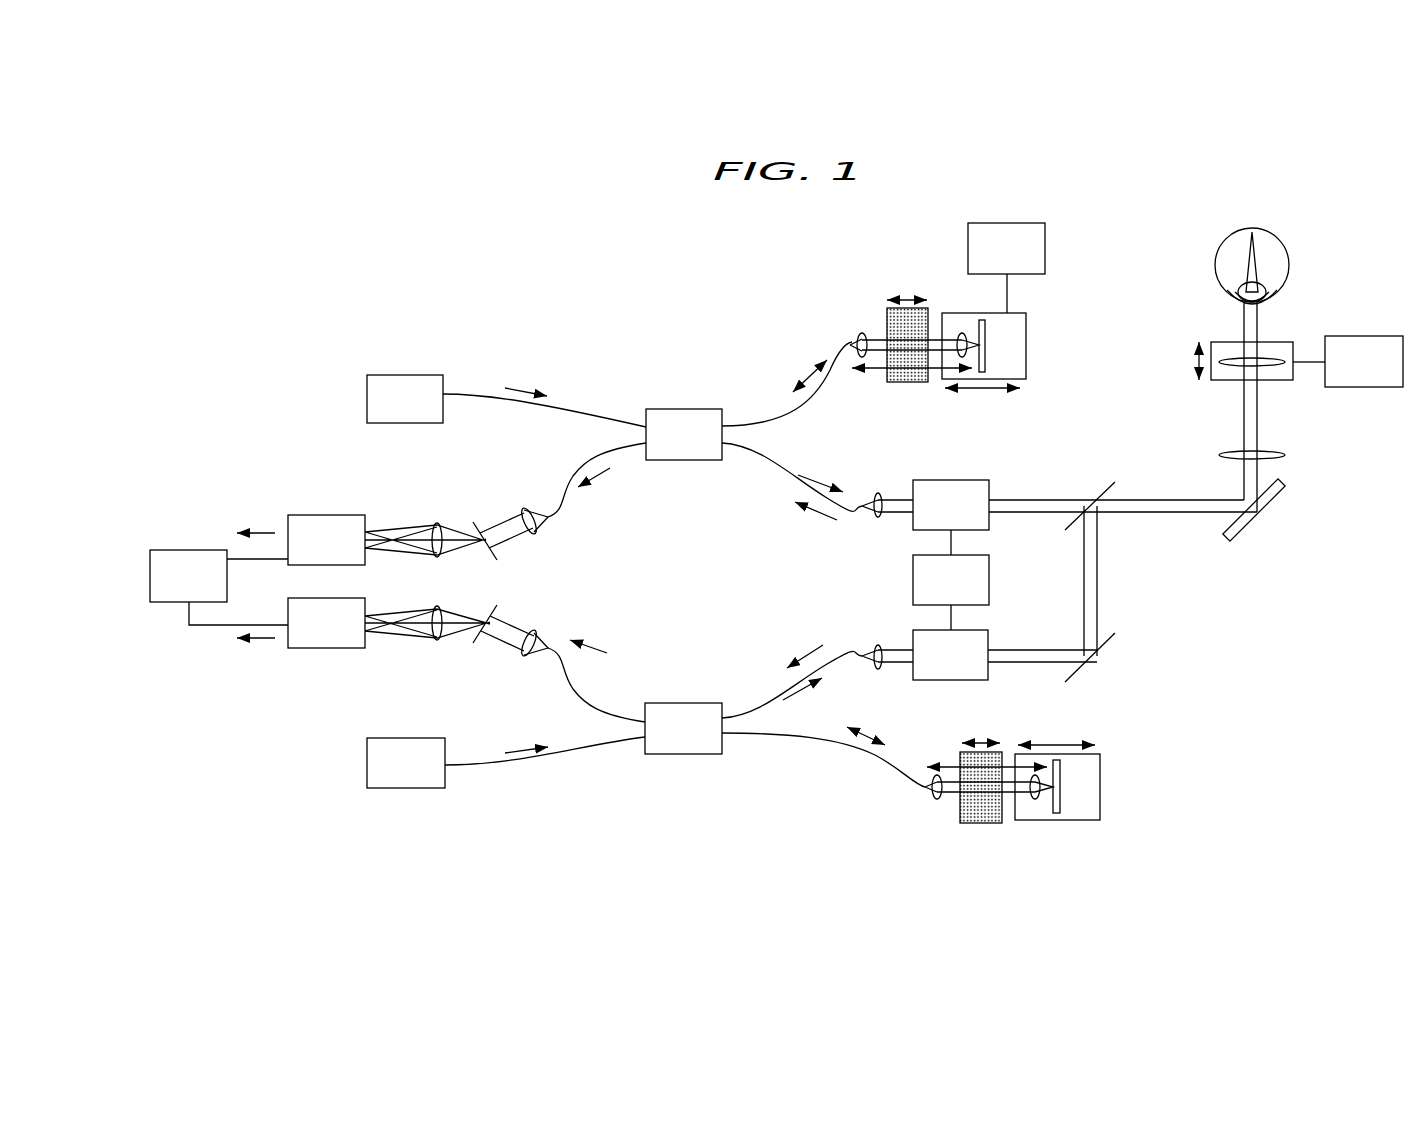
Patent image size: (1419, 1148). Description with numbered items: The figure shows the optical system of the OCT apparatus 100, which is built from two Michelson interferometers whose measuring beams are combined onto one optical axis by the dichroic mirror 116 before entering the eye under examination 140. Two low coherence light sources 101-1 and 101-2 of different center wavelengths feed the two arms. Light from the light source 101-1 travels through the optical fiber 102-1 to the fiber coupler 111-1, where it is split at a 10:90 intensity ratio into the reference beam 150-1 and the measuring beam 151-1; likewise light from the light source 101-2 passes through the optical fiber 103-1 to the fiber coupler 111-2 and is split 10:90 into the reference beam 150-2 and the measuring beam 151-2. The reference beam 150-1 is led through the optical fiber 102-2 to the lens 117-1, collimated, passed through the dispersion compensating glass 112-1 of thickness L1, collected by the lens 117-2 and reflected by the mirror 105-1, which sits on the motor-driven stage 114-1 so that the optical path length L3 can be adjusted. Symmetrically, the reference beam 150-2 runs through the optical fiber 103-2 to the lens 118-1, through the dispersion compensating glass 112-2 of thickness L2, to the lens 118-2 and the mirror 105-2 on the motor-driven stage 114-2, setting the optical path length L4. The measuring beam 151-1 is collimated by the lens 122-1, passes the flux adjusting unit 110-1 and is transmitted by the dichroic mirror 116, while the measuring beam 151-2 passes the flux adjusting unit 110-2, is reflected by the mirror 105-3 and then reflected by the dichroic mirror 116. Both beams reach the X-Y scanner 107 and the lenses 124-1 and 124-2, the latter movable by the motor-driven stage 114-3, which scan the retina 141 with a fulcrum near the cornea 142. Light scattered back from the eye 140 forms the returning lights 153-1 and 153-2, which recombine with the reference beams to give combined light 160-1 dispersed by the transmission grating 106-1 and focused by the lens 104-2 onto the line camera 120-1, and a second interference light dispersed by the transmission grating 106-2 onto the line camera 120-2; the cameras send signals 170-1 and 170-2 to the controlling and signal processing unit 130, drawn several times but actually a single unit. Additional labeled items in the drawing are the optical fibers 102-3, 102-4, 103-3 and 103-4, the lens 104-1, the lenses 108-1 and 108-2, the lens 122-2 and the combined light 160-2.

The OCT apparatus 100 is at (341, 307).
The light source 101-1 is at (405, 399).
The light source 101-2 is at (406, 763).
The optical fiber 102-1 is at (563, 394).
The optical fiber 102-2 is at (785, 413).
The optical fiber 102-3 is at (627, 443).
The optical fiber 102-4 is at (777, 475).
The optical fiber 103-1 is at (558, 760).
The optical fiber 103-2 is at (820, 738).
The optical fiber 103-3 is at (620, 717).
The optical fiber 103-4 is at (772, 690).
The lens 104-1 is at (527, 504).
The lens 104-2 is at (434, 522).
The mirror 105-1 is at (983, 380).
The mirror 105-2 is at (1055, 760).
The mirror 105-3 is at (1118, 652).
The transmission grating 106-1 is at (477, 520).
The transmission grating 106-2 is at (487, 613).
The X-Y scanner 107 is at (1273, 498).
The lens 108-1 is at (527, 657).
The lens 108-2 is at (436, 640).
The ten-percent split ratio 10 is at (829, 565).
The ninety-percent split ratio 90 is at (800, 580).
The flux adjusting unit 110-1 is at (951, 505).
The flux adjusting unit 110-2 is at (950, 655).
The fiber coupler 111-1 is at (684, 434).
The fiber coupler 111-2 is at (683, 728).
The dispersion compensating glass 112-1 is at (903, 382).
The dispersion compensating glass 112-2 is at (977, 825).
The motor-driven stage 114-1 is at (1026, 345).
The motor-driven stage 114-2 is at (1100, 785).
The motor-driven stage 114-3 is at (1218, 342).
The dichroic mirror 116 is at (1108, 490).
The lens 117-1 is at (858, 333).
The lens 117-2 is at (960, 333).
The lens 118-1 is at (937, 800).
The lens 118-2 is at (1035, 805).
The line camera 120-1 is at (326, 540).
The line camera 120-2 is at (326, 623).
The lens 122-1 is at (878, 517).
The lens 122-2 is at (878, 646).
The lens 124-1 is at (1218, 455).
The lens 124-2 is at (1223, 366).
The controlling and signal processing unit 130 is at (776, 426).
The eye under examination 140 is at (1217, 260).
The retina 141 is at (1248, 230).
The cornea 142 is at (1266, 300).
The reference beam 150-1 is at (799, 362).
The reference beam 150-2 is at (881, 724).
The measuring beam 151-1 is at (820, 470).
The measuring beam 151-2 is at (810, 701).
The returning light 153-1 is at (815, 526).
The returning light 153-2 is at (810, 643).
The combined light 160-1 is at (607, 493).
The combined light 160-2 is at (595, 633).
The signal 170-1 is at (245, 517).
The signal 170-2 is at (245, 656).
The thickness of dispersion compensating glass L1 is at (908, 297).
The thickness of dispersion compensating glass L2 is at (983, 742).
The optical path length L3 is at (912, 384).
The optical path length L4 is at (981, 752).